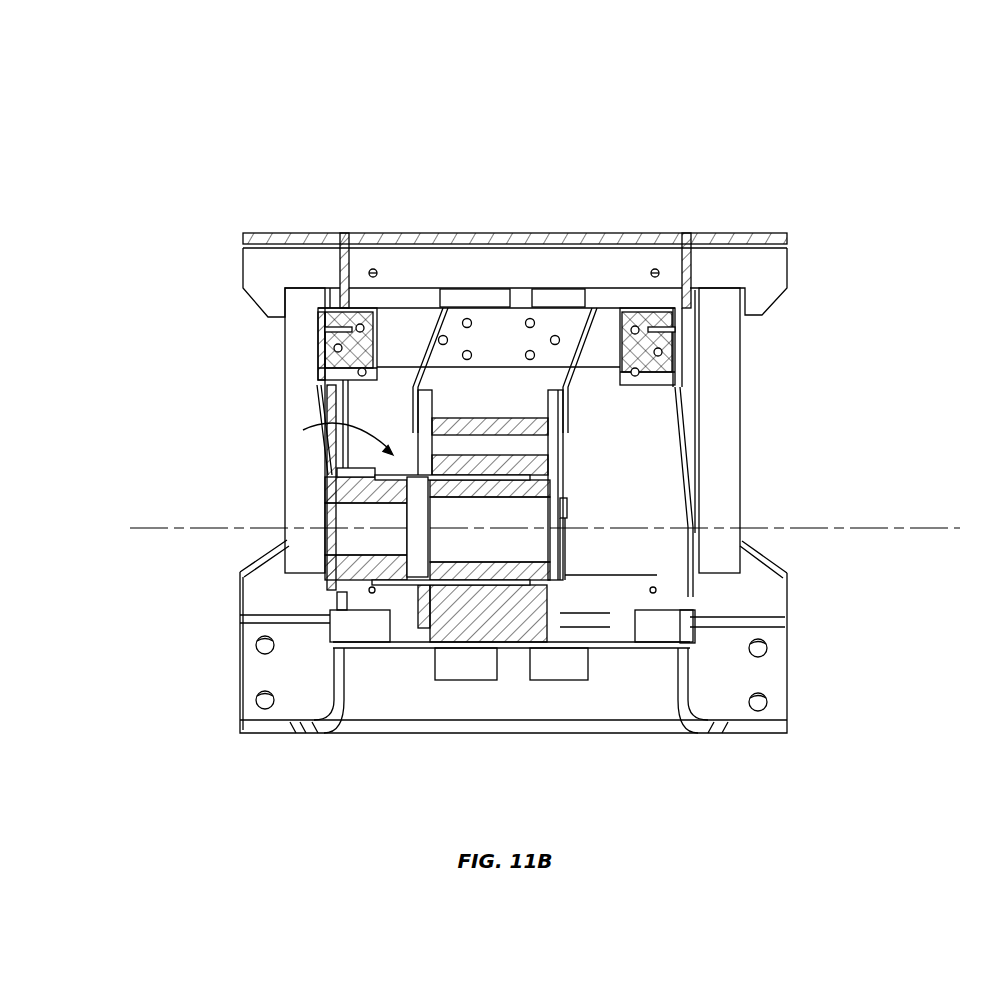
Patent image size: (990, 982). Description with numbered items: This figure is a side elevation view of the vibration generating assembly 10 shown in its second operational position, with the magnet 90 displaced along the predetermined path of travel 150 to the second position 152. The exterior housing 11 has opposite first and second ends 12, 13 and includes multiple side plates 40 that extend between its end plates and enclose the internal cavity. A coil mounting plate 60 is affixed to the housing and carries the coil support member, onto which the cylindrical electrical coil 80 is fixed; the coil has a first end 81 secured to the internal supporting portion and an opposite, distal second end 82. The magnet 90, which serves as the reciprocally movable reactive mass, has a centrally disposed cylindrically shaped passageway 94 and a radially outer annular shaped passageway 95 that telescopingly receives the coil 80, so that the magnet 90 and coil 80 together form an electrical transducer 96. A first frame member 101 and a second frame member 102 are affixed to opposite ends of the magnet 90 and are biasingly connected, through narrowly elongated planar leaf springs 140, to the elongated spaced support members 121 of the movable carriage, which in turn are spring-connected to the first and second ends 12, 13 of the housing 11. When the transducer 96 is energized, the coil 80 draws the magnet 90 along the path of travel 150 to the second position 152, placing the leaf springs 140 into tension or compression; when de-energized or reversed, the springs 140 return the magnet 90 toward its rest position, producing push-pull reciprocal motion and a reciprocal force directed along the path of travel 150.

The vibration generating assembly 10 is at (701, 148).
The exterior housing 11 is at (633, 735).
The first end 12 is at (283, 335).
The second end 13 is at (742, 458).
The side plates 40 is at (468, 233).
The coil mounting plate 60 is at (333, 562).
The electrical coil 80 is at (410, 568).
The first end 81 is at (340, 452).
The second end 82 is at (548, 480).
The magnet 90 is at (560, 493).
The cylindrically shaped passageway 94 is at (528, 552).
The annular shaped passageway 95 is at (497, 590).
The electrical transducer 96 is at (337, 425).
The first frame member 101 is at (432, 402).
The second frame member 102 is at (562, 565).
The support members 121 is at (500, 330).
The planar leaf springs 140 is at (430, 330).
The predetermined path of travel 150 is at (165, 522).
The second position 152 is at (447, 568).